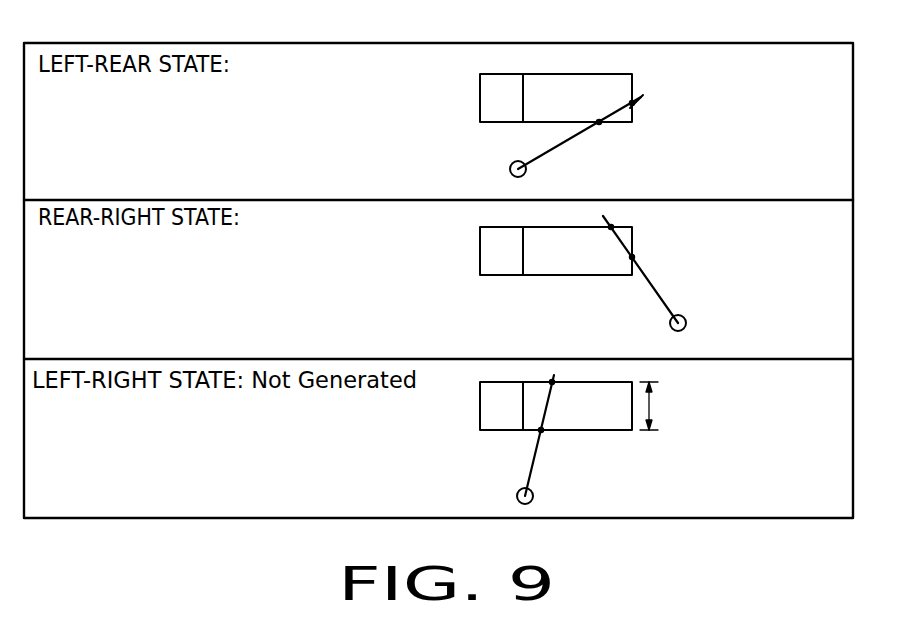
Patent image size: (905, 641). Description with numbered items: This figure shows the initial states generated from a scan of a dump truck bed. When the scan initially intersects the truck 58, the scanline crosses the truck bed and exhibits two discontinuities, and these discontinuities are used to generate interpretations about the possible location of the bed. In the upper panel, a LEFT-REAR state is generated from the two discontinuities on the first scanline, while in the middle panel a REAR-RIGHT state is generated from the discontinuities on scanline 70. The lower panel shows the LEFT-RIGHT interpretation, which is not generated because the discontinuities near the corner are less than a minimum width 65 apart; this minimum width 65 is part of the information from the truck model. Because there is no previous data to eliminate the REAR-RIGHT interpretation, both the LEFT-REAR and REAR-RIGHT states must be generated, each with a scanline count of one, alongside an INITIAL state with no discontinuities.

The truck 58 is at (480, 94).
The minimum width 65 is at (652, 408).
The scanline 70 is at (663, 301).